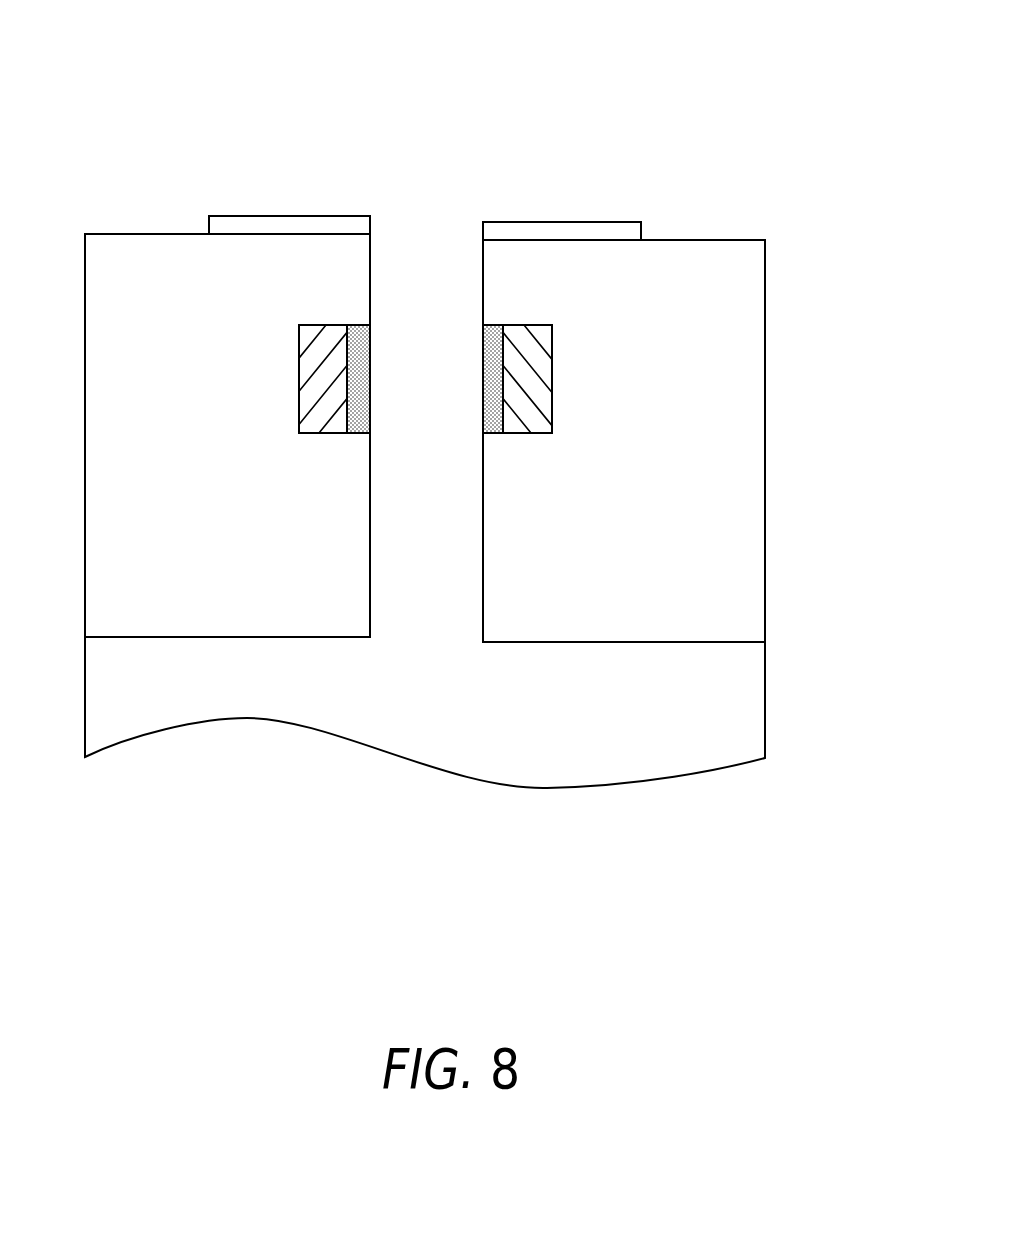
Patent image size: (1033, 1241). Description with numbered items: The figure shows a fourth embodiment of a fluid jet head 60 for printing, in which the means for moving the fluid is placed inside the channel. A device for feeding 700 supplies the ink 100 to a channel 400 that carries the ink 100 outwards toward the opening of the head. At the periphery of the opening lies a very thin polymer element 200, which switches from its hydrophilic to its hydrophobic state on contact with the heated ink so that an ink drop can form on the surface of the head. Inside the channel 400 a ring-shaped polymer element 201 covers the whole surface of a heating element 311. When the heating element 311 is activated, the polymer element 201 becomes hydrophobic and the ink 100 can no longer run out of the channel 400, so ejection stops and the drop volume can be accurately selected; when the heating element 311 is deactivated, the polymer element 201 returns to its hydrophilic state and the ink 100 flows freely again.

The fluid jet head 60 is at (85, 187).
The ink 100 is at (767, 700).
The polymer element 200 is at (605, 229).
The ring-shaped polymer element 201 is at (495, 338).
The heating element 311 is at (540, 385).
The channel 400 is at (483, 562).
The device for feeding 700 is at (227, 690).